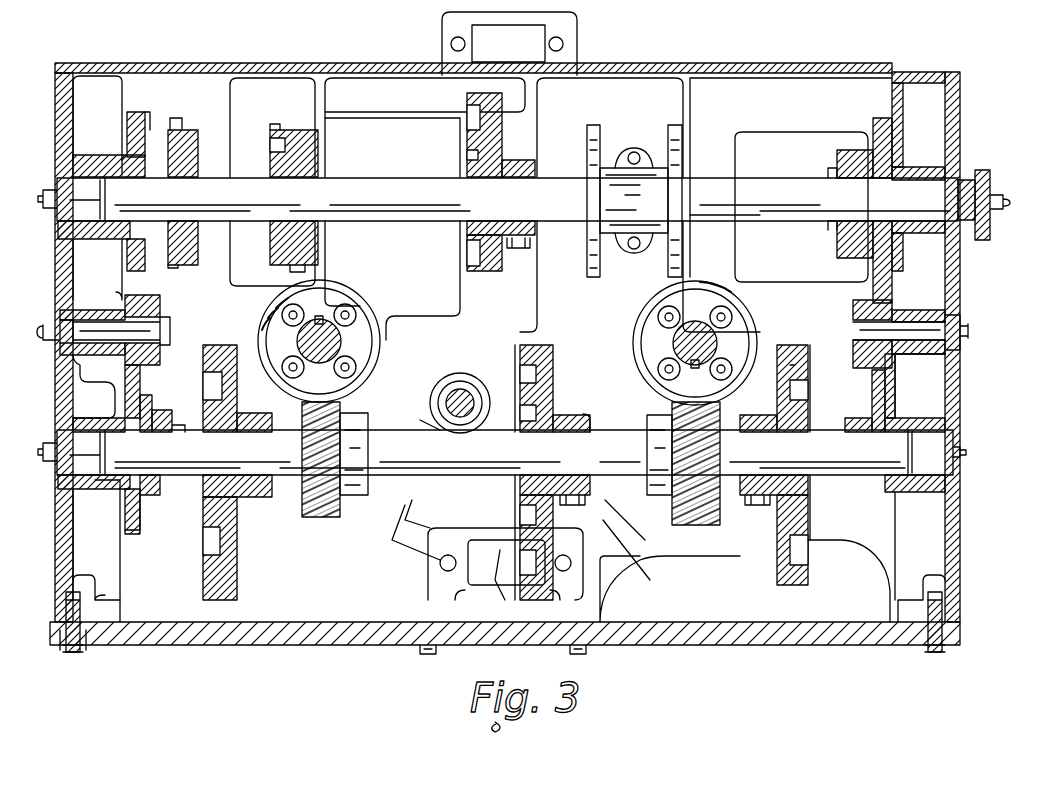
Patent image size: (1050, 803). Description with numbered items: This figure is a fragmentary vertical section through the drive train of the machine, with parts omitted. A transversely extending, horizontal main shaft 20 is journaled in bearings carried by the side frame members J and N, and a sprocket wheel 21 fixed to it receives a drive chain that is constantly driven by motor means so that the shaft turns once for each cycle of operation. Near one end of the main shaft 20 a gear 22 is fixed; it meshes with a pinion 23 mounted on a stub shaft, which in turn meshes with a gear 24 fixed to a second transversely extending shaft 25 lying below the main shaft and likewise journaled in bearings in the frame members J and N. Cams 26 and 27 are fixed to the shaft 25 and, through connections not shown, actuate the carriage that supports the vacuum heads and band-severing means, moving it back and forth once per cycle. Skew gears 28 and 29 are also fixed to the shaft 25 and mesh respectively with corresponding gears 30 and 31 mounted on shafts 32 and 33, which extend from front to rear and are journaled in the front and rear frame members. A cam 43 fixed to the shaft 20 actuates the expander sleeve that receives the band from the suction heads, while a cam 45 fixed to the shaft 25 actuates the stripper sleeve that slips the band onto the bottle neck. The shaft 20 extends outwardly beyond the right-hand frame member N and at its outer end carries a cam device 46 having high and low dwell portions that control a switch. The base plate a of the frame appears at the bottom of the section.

The main shaft 20 is at (388, 185).
The sprocket wheel 21 is at (190, 135).
The gear 22 is at (135, 112).
The pinion 23 is at (900, 318).
The gear 24 is at (160, 420).
The second shaft 25 is at (183, 487).
The cam 26 is at (225, 585).
The cam 27 is at (785, 580).
The skew gear 28 is at (322, 517).
The skew gear 29 is at (698, 525).
The gear 30 is at (339, 341).
The gear 31 is at (701, 349).
The shaft 32 is at (345, 325).
The shaft 33 is at (715, 330).
The cam 43 is at (505, 125).
The cam 45 is at (555, 345).
The cam device 46 is at (995, 168).
The side frame member J is at (55, 268).
The right-hand frame member N is at (958, 262).
The base plate a is at (760, 648).